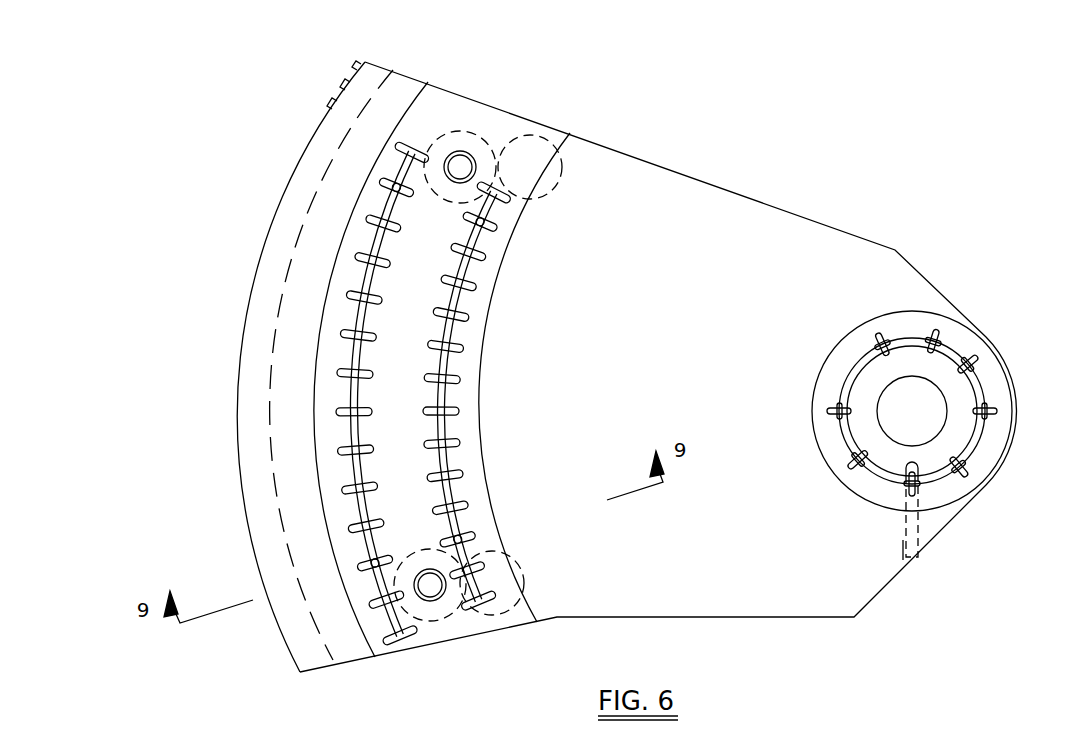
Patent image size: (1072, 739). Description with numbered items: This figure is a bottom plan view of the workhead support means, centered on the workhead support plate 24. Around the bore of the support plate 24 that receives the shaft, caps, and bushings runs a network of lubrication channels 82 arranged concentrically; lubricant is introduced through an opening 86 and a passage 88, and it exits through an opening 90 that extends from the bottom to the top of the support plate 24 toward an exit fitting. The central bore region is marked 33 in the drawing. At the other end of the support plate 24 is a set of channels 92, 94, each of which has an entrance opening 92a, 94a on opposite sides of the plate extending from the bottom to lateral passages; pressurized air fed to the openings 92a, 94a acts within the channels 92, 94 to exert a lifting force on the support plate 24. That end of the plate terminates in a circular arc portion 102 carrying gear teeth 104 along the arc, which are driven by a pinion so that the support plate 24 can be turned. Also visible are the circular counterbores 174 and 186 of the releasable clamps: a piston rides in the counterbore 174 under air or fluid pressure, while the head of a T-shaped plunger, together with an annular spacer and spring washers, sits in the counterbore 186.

The workhead support plate 24 is at (740, 198).
The shaft bore 33 is at (946, 421).
The lubrication channels 82 is at (960, 351).
The opening 86 is at (918, 548).
The passage 88 is at (915, 521).
The opening 90 is at (925, 330).
The channel 92 is at (415, 150).
The opening 92a is at (393, 187).
The channel 94 is at (446, 362).
The opening 94a is at (483, 222).
The circular arc portion 102 is at (242, 318).
The gear teeth 104 is at (362, 66).
The circular counterbore 174 is at (541, 134).
The circular counterbore 186 is at (463, 135).